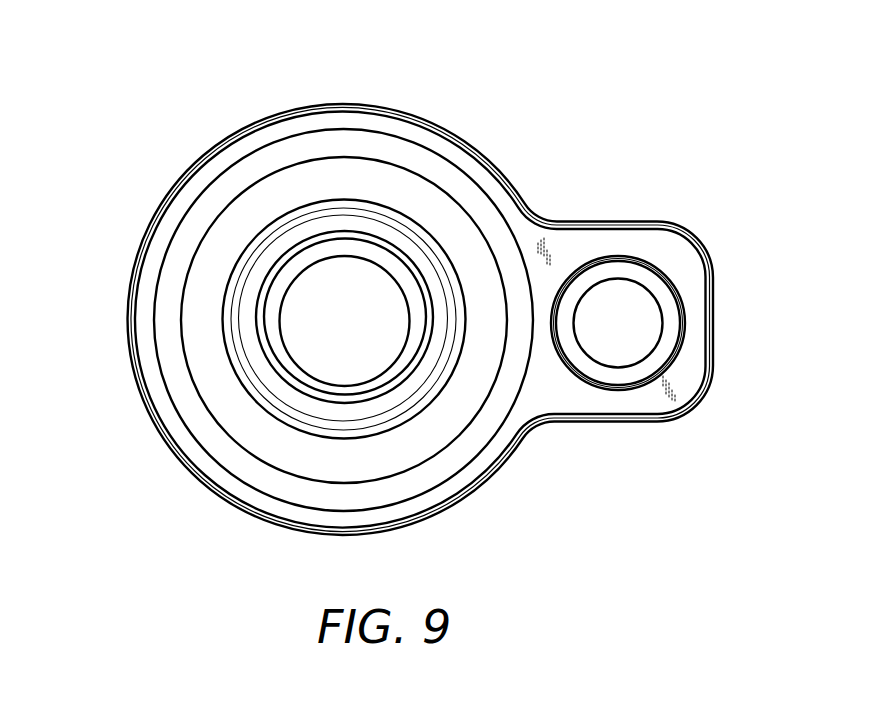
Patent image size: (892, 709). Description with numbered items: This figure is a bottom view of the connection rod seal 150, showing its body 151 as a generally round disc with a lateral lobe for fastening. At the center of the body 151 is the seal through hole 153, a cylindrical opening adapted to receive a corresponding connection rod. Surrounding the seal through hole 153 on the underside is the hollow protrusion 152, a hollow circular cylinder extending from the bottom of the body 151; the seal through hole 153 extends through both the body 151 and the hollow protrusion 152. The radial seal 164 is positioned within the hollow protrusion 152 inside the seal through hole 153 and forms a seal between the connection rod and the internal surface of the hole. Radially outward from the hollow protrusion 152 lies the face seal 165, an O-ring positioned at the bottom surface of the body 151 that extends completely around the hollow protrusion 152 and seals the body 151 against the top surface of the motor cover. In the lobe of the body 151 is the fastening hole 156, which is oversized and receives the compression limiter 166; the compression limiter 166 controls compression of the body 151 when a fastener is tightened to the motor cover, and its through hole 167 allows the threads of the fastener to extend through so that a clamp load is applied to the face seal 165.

The connection rod seal 150 is at (510, 93).
The body 151 is at (247, 145).
The hollow protrusion 152 is at (268, 387).
The seal through hole 153 is at (257, 320).
The fastening hole 156 is at (610, 257).
The radial seal 164 is at (283, 278).
The face seal 165 is at (230, 455).
The compression limiter 166 is at (668, 310).
The through hole 167 is at (617, 327).